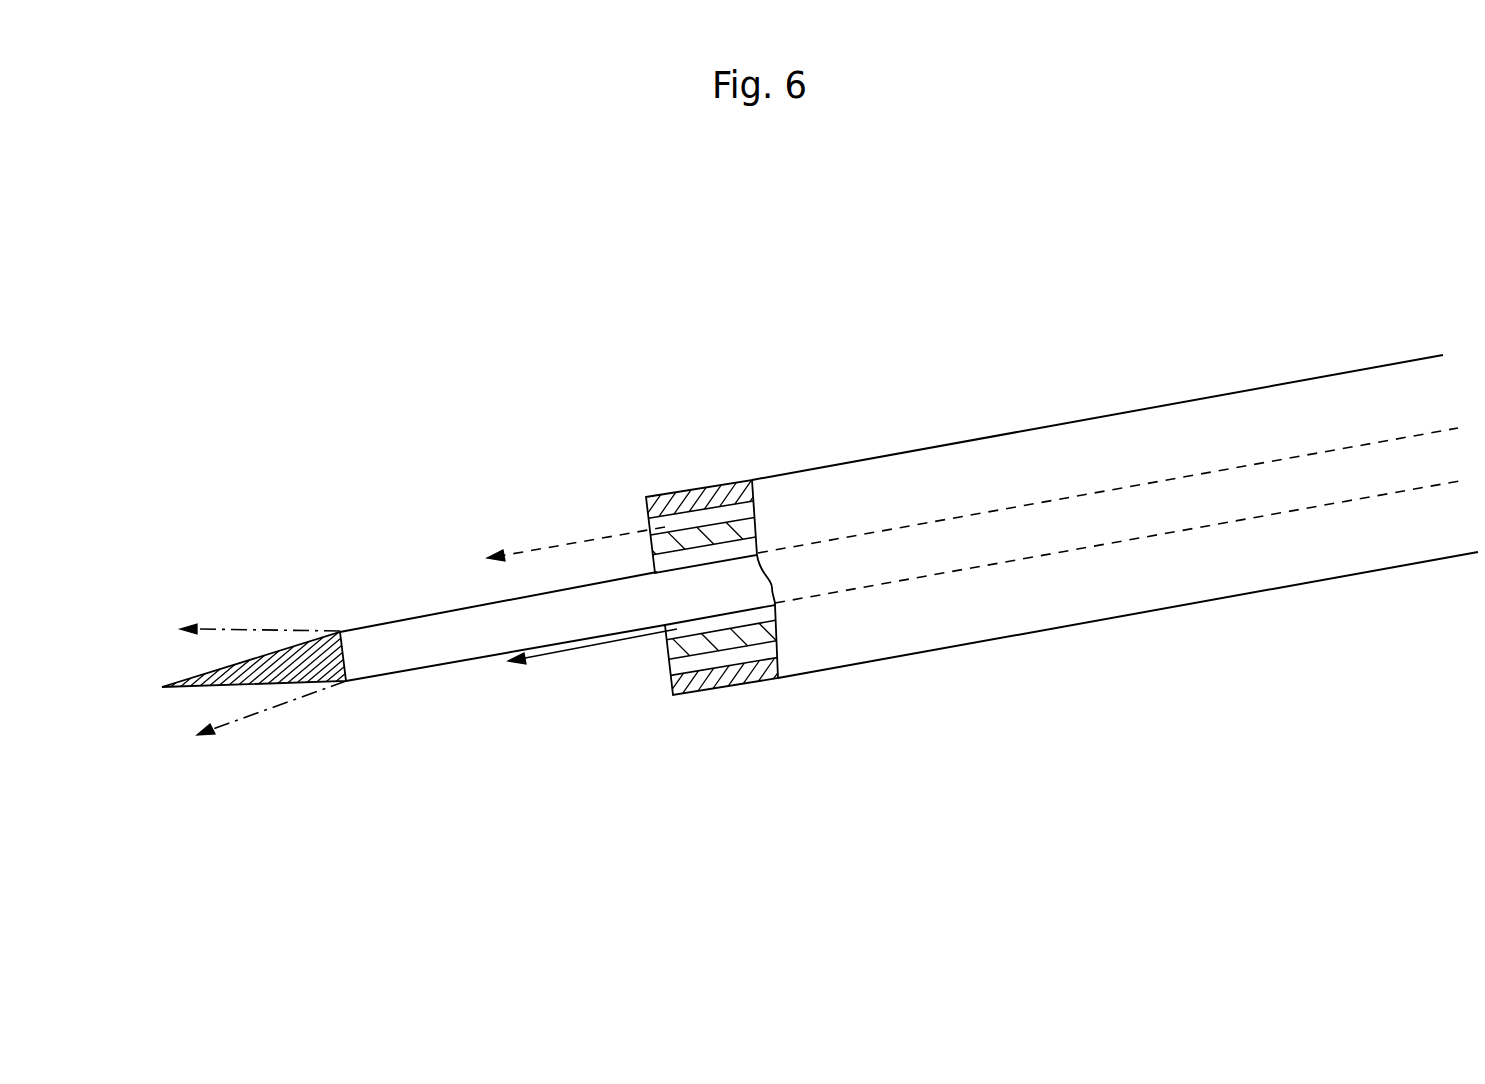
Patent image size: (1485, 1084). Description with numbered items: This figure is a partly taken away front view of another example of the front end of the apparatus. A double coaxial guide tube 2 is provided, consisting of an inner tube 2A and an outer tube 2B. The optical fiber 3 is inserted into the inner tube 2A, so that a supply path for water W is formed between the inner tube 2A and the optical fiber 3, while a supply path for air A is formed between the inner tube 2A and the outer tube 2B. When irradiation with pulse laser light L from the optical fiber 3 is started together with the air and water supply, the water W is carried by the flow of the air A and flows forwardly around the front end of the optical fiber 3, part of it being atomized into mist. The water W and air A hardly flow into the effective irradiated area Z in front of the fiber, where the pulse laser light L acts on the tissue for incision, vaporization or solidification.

The guide tube 2 is at (917, 517).
The inner tube 2A is at (708, 540).
The outer tube 2B is at (728, 486).
The optical fiber 3 is at (480, 632).
The effective irradiated area Z is at (285, 660).
The pulse laser light L is at (272, 628).
The air A is at (568, 543).
The water W is at (598, 645).